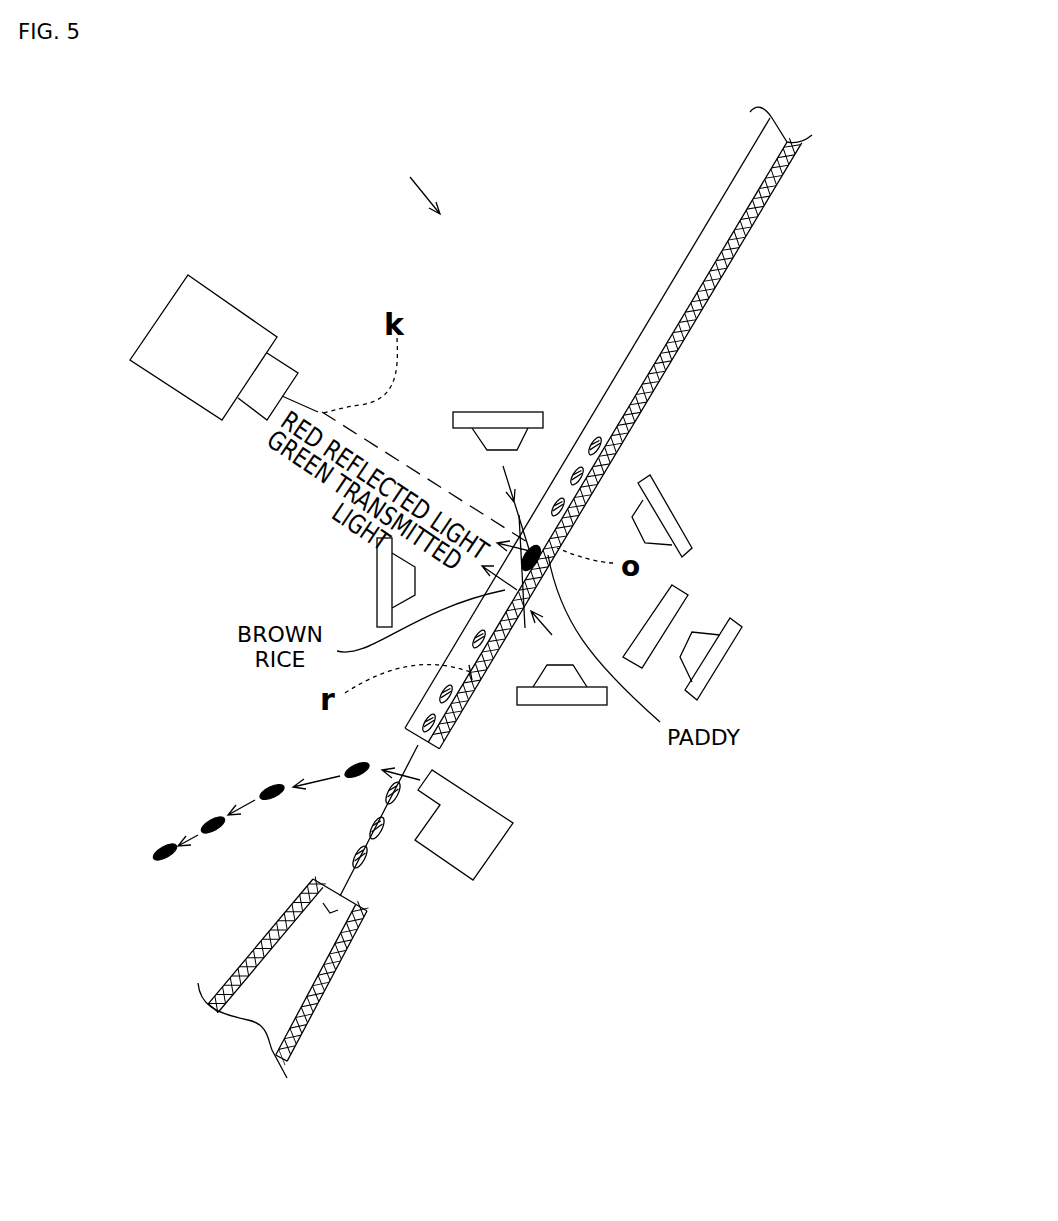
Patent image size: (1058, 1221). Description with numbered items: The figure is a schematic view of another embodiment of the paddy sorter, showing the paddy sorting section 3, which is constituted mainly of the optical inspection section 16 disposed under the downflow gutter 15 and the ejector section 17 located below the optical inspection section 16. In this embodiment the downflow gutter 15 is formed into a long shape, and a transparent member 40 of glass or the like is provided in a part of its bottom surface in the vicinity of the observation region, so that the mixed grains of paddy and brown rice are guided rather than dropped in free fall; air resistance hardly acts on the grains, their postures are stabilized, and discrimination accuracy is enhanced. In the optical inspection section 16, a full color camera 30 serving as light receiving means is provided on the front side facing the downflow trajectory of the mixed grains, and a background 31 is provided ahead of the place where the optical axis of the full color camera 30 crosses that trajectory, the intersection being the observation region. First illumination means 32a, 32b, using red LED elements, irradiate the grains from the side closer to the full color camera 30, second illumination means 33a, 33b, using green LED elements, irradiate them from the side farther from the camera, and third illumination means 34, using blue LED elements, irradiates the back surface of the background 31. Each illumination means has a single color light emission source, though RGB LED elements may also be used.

The paddy sorting section 3 is at (412, 171).
The downflow gutter 15 is at (683, 275).
The optical inspection section 16 is at (735, 414).
The ejector section 17 is at (575, 848).
The full color camera 30 is at (164, 312).
The background 31 is at (683, 592).
The first illumination means 32a is at (502, 412).
The first illumination means 32b is at (376, 572).
The second illumination means 33a is at (562, 705).
The second illumination means 33b is at (672, 512).
The third illumination means 34 is at (722, 658).
The transparent member 40 is at (447, 660).